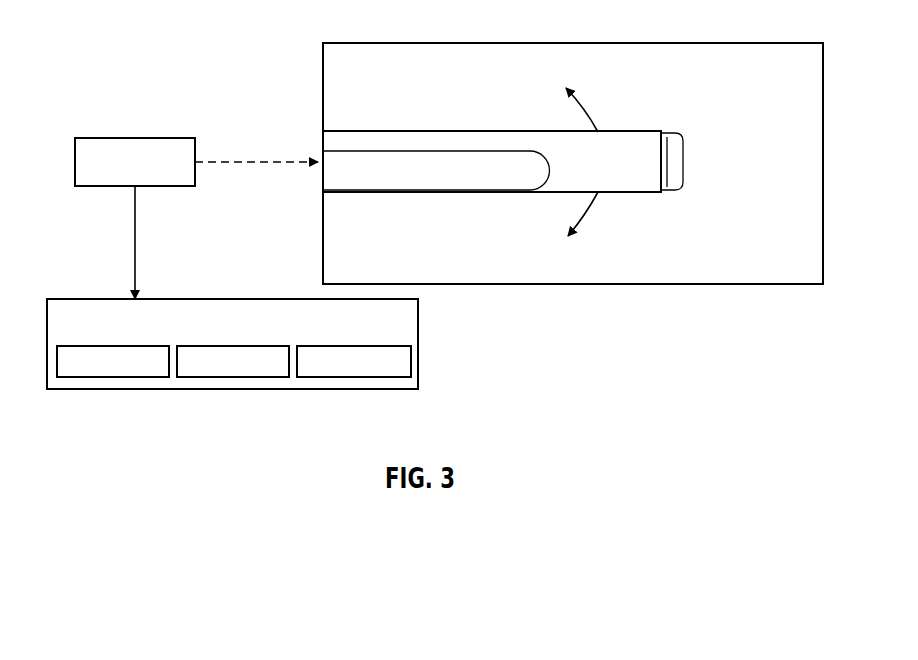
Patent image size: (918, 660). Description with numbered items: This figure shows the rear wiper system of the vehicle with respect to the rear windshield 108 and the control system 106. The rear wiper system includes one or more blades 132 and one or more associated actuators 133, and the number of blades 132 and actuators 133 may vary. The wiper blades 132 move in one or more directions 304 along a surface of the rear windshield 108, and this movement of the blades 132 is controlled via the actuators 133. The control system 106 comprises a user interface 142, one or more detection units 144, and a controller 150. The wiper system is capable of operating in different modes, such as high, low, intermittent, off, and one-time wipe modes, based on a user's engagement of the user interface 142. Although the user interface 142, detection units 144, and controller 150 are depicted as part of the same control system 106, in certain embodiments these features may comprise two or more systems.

The rear windshield 108 is at (782, 42).
The blades 132 is at (476, 130).
The directions 304 is at (588, 110).
The actuators 133 is at (118, 138).
The control system 106 is at (90, 299).
The user interface 142 is at (112, 378).
The detection units 144 is at (233, 378).
The controller 150 is at (353, 378).